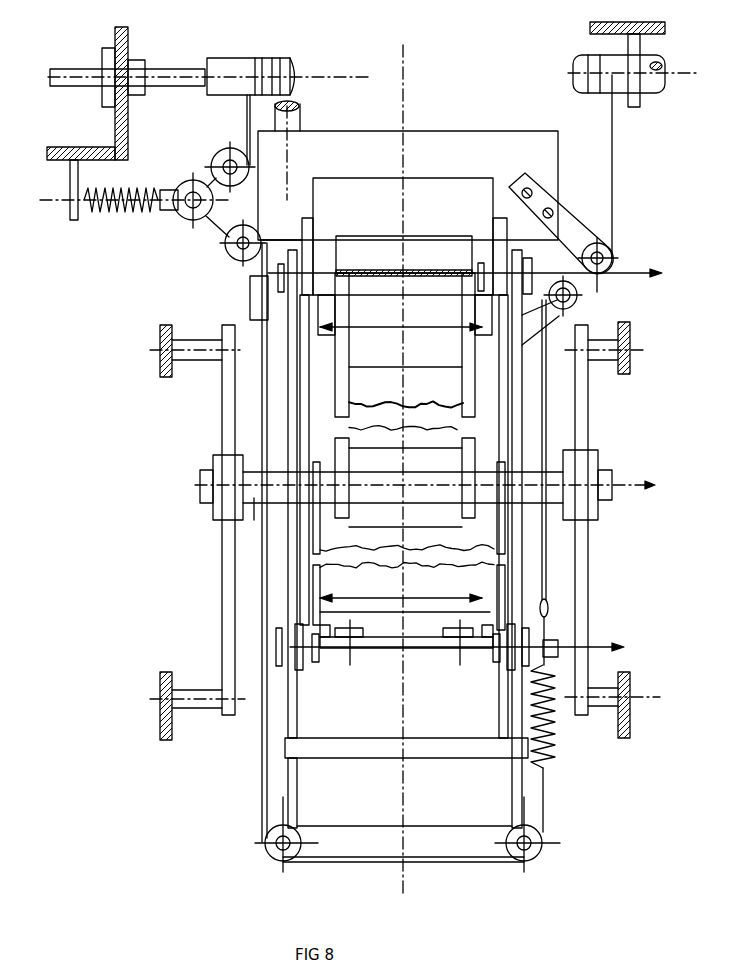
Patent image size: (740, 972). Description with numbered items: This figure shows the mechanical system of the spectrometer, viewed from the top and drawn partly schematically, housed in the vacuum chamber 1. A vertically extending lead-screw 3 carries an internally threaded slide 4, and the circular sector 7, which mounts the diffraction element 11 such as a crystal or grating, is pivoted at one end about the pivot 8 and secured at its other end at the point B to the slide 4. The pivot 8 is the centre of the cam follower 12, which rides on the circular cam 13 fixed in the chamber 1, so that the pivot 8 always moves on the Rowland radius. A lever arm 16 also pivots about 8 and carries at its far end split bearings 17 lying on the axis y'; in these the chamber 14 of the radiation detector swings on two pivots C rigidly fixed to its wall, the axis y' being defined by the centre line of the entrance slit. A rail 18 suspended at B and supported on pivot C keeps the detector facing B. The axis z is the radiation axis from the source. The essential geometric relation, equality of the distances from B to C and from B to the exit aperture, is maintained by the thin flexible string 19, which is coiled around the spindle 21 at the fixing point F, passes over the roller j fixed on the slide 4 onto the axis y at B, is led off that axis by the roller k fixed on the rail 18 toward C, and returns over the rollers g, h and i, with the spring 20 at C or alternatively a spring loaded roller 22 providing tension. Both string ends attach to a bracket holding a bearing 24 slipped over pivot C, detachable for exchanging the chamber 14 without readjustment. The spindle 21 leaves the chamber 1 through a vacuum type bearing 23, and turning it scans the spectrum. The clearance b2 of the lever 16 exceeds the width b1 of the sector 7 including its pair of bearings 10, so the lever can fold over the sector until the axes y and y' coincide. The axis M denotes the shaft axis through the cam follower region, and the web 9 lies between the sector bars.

The vacuum chamber 1 is at (128, 30).
The lead-screw 3 is at (297, 115).
The slide 4 is at (473, 137).
The sector 7 is at (344, 373).
The pivot 8 is at (254, 505).
The fabric web 9 is at (463, 403).
The pair of bearings 10 is at (328, 313).
The diffraction element 11 is at (424, 246).
The cam follower 12 is at (222, 512).
The circular cam 13 is at (230, 563).
The chamber of radiation detector 14 is at (383, 722).
The lever arm 16 is at (318, 452).
The bearings 17 is at (470, 652).
The rail 18 is at (299, 553).
The string 19 is at (265, 737).
The spring 20 is at (553, 760).
The spindle 21 is at (280, 68).
The spring loaded roller 22 is at (190, 212).
The vacuum type bearing 23 is at (106, 95).
The bearing 24 is at (547, 630).
The pivot point B is at (526, 262).
The pivots C is at (560, 641).
The fixing point F is at (660, 98).
The axis M is at (618, 488).
The roller g is at (248, 290).
The roller h is at (266, 840).
The roller i is at (540, 843).
The roller j is at (610, 258).
The roller k is at (577, 303).
The axis y is at (465, 289).
The axis y' is at (466, 647).
The radiation axis z is at (405, 277).
The width of circular sector b1 is at (401, 322).
The clearance of lever b2 is at (401, 599).